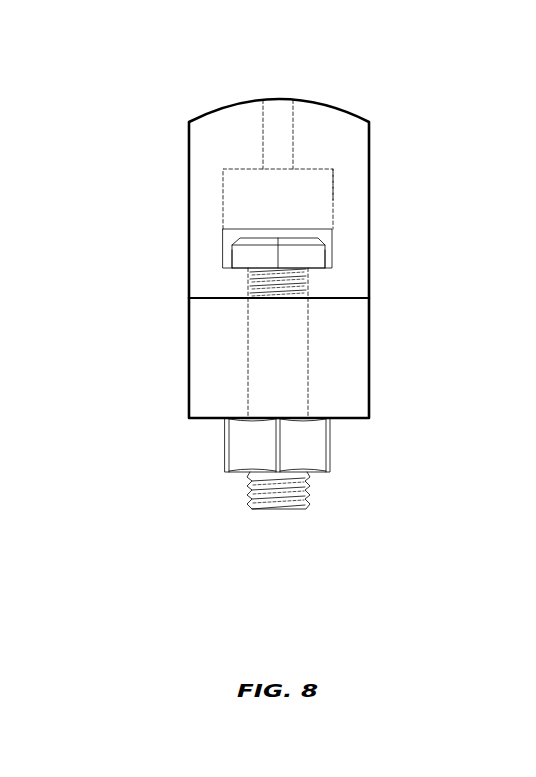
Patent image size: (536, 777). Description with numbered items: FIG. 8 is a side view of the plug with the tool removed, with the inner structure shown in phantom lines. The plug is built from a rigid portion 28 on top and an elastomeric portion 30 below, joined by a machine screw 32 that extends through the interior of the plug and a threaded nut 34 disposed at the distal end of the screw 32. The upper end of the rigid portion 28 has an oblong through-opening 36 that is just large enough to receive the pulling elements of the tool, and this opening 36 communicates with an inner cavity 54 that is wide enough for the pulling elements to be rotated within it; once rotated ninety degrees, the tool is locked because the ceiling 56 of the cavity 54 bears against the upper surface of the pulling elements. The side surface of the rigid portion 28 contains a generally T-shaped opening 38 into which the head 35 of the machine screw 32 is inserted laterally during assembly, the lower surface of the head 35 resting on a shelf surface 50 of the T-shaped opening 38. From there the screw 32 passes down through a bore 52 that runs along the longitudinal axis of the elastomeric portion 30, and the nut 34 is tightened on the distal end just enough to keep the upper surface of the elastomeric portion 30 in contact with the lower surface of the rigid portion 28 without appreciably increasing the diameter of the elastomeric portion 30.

The rigid portion 28 is at (369, 233).
The elastomeric portion 30 is at (369, 365).
The machine screw 32 is at (308, 283).
The threaded nut 34 is at (330, 455).
The head 35 is at (237, 257).
The oblong through-opening 36 is at (278, 145).
The T-shaped opening 38 is at (227, 240).
The shelf surface 50 is at (327, 262).
The bore 52 is at (243, 384).
The inner cavity 54 is at (240, 196).
The ceiling 56 is at (333, 170).